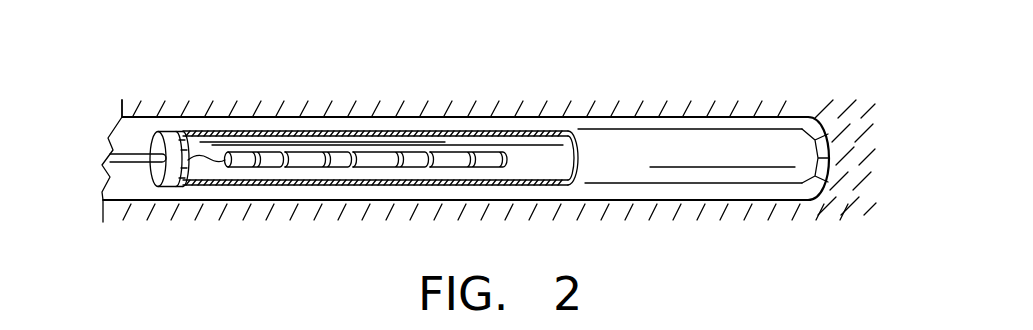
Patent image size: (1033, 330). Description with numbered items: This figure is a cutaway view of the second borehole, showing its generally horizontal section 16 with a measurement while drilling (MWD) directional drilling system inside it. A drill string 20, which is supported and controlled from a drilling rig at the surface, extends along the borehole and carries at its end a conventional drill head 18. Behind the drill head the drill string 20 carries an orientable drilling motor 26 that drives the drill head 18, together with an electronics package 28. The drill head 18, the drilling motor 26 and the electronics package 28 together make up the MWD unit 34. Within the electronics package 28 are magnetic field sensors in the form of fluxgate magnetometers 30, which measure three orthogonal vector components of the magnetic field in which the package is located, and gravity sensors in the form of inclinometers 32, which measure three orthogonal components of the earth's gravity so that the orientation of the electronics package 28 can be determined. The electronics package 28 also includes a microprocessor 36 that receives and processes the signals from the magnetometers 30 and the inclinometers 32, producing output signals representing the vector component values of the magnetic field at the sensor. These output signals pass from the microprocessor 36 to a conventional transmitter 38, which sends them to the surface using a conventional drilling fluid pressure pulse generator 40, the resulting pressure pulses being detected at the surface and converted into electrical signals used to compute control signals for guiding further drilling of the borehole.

The horizontal section of borehole 16 is at (150, 112).
The drill head 18 is at (845, 127).
The drill string 20 is at (133, 160).
The orientable drilling motor 26 is at (613, 143).
The electronics package 28 is at (305, 187).
The fluxgate magnetometers 30 is at (408, 155).
The inclinometers 32 is at (447, 155).
The measurement while drilling (MWD) unit 34 is at (324, 115).
The microprocessor 36 is at (340, 155).
The transmitter 38 is at (262, 152).
The drilling fluid pressure pulse generator 40 is at (172, 135).